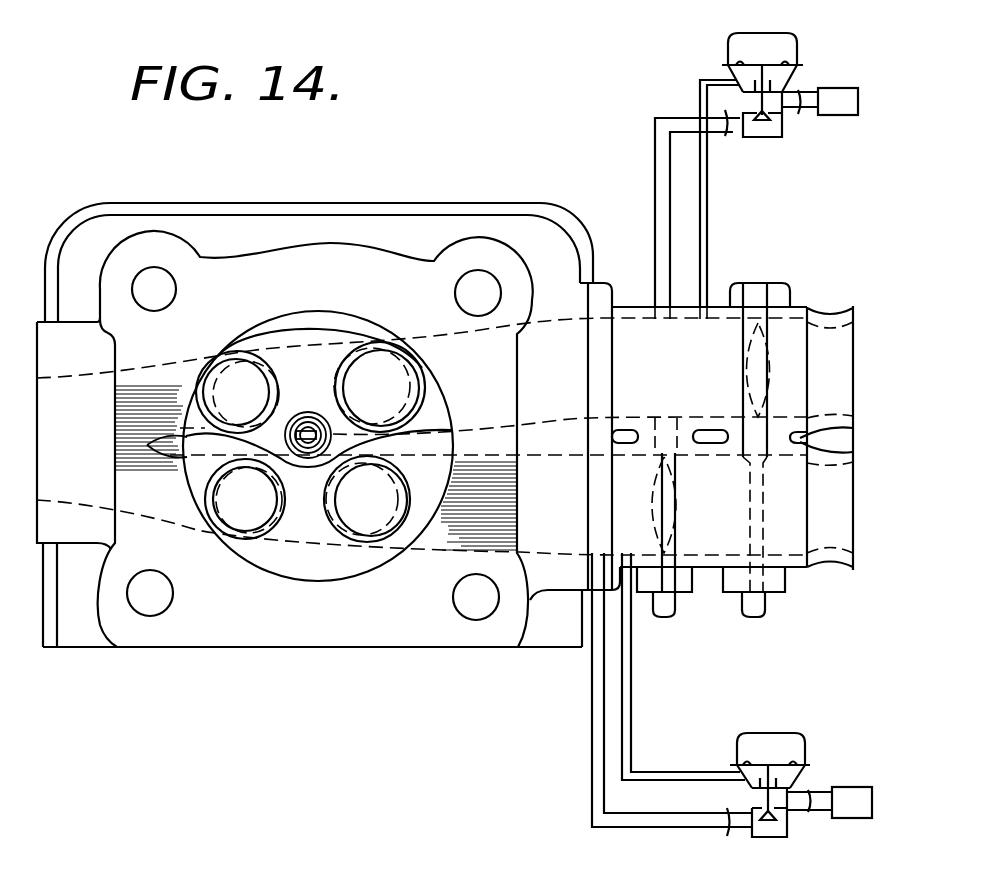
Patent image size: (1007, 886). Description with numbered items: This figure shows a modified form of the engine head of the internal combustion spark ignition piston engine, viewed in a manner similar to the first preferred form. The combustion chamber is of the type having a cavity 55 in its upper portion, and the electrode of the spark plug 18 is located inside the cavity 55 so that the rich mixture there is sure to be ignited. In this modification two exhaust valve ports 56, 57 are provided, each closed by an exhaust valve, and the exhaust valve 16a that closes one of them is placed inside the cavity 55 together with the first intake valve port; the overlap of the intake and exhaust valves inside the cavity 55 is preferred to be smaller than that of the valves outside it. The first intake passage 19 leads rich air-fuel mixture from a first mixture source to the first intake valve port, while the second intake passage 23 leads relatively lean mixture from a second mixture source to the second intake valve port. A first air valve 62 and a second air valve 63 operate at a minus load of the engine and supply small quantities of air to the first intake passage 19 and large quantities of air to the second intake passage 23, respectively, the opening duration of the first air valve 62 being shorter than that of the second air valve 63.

The exhaust valve 16a is at (250, 411).
The spark plug 18 is at (310, 412).
The first intake passage 19 is at (643, 317).
The second intake passage 23 is at (710, 557).
The cavity 55 is at (312, 572).
The exhaust valve port 56 is at (187, 353).
The exhaust valve port 57 is at (192, 535).
The first air valve 62 is at (727, 50).
The second air valve 63 is at (807, 745).